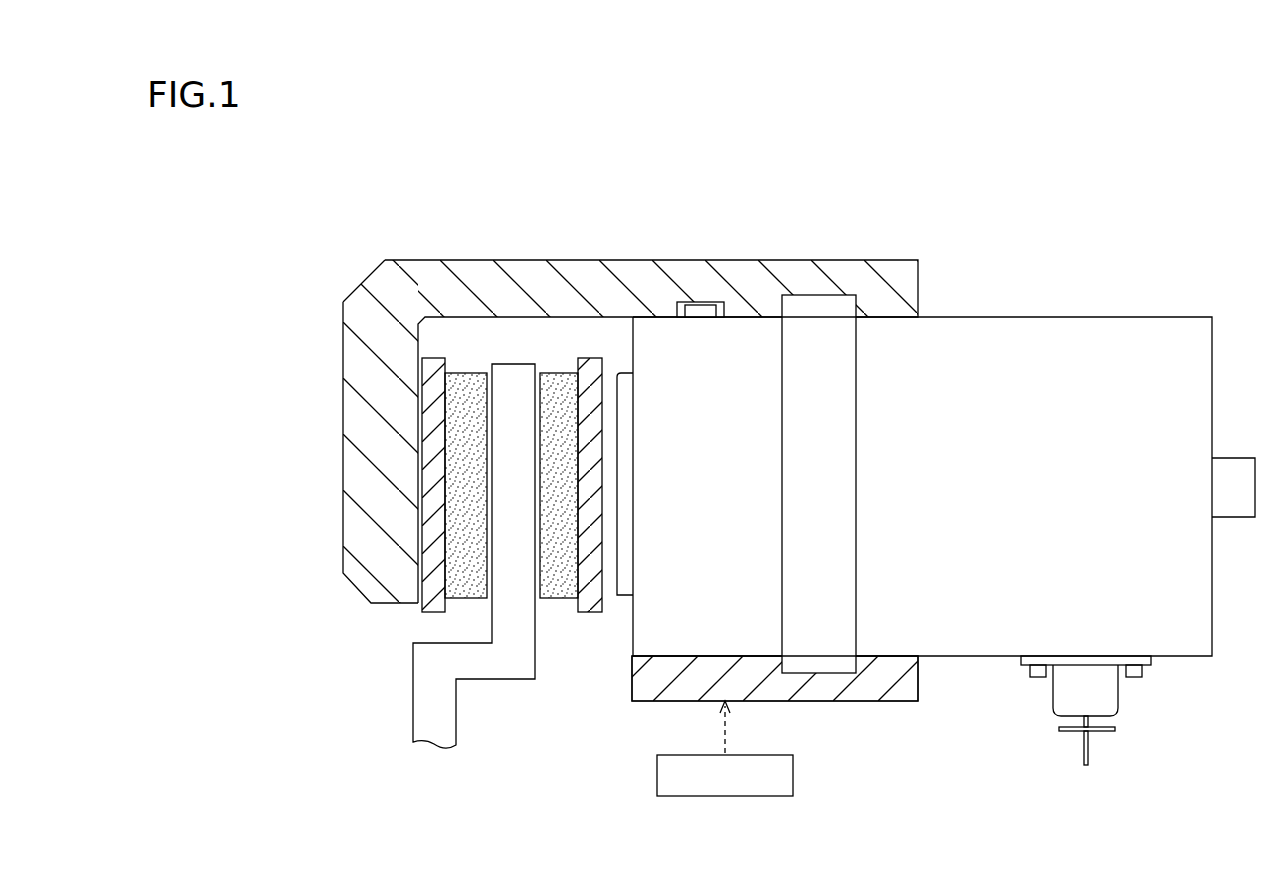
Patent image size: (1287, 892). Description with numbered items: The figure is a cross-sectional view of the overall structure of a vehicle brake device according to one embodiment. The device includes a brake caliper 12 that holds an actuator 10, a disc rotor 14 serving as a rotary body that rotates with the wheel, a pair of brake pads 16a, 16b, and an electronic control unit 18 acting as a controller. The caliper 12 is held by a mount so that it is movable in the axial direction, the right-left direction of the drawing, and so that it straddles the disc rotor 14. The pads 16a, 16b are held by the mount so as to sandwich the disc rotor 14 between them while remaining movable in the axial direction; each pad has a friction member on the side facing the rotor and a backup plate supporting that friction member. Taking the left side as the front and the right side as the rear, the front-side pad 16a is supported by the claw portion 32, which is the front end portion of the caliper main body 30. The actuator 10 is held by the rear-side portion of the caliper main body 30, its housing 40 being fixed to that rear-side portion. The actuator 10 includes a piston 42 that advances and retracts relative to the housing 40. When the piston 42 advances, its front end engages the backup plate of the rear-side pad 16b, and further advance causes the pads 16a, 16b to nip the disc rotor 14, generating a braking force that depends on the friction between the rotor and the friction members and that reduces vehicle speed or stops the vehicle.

The actuator 10 is at (761, 447).
The brake caliper 12 is at (593, 418).
The disc rotor 14 is at (422, 680).
The brake pad 16a is at (452, 403).
The brake pad 16b is at (574, 396).
The electronic control unit 18 is at (777, 755).
The caliper main body 30 is at (670, 264).
The claw portion 32 is at (358, 513).
The housing 40 is at (1135, 325).
The piston 42 is at (624, 592).